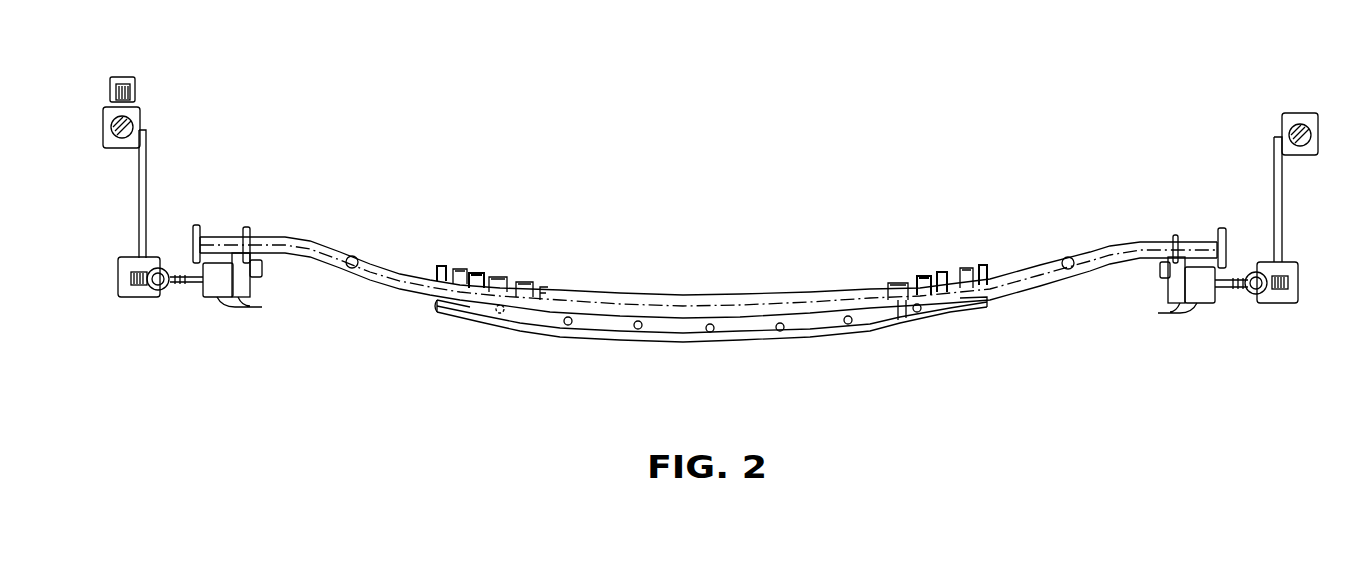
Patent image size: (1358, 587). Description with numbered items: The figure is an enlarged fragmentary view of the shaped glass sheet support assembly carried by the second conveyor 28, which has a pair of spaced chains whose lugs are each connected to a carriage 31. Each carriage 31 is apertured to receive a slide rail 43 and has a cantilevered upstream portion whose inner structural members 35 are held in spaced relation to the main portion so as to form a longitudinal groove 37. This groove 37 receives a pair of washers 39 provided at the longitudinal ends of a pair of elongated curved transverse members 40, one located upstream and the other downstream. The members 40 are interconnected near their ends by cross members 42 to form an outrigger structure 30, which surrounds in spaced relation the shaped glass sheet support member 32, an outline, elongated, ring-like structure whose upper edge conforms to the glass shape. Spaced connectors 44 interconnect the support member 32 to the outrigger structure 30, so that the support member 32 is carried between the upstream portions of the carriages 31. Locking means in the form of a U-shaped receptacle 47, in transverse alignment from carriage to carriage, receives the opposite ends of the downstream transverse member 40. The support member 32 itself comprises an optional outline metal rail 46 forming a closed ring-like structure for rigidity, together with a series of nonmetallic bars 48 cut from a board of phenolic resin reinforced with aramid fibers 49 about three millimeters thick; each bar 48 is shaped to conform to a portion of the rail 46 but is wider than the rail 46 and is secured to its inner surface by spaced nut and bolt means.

The second conveyor 28 is at (124, 77).
The outrigger structure 30 is at (1036, 301).
The carriage 31 is at (134, 258).
The shaped glass sheet support member 32 is at (580, 281).
The inner structural members 35 is at (262, 307).
The longitudinal groove 37 is at (168, 237).
The washers 39 is at (197, 225).
The elongated curved transverse members 40 is at (402, 285).
The cross members 42 is at (366, 256).
The slide rail 43 is at (133, 126).
The connectors 44 is at (513, 307).
The outline metal rail 46 is at (900, 300).
The U-shaped receptacle 47 is at (256, 220).
The nonmetallic bars 48 is at (898, 282).
The aramid fibers 49 is at (945, 282).